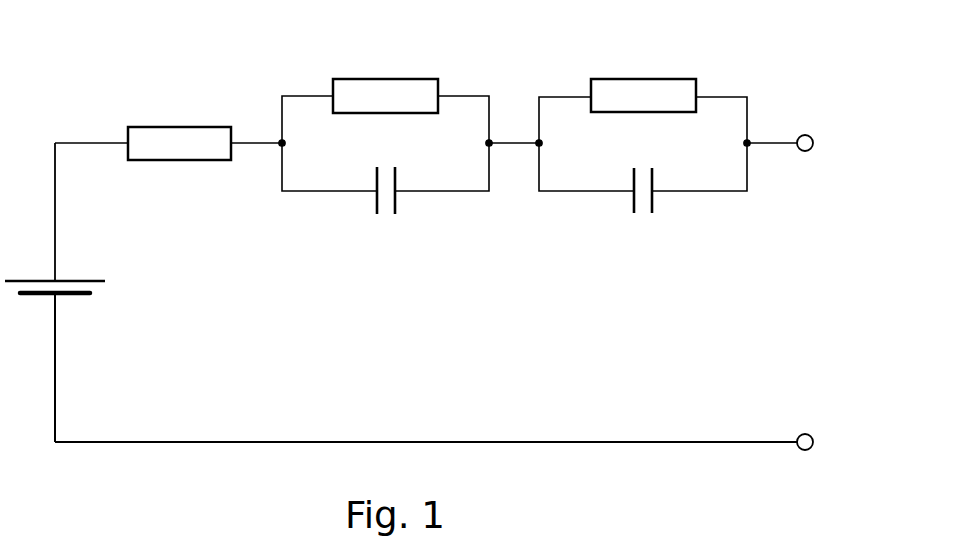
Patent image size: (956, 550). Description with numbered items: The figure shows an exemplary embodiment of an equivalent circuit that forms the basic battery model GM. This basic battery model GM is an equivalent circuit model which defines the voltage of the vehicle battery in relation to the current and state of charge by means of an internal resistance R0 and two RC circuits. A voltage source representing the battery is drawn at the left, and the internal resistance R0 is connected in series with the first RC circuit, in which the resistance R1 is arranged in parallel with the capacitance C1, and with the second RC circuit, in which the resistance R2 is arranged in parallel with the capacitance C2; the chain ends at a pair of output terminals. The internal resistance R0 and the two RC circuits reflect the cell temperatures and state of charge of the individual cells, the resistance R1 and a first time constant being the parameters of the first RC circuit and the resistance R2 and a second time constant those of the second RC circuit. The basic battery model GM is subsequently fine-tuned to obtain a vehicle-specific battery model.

The internal resistance R0 is at (179, 110).
The resistance of the first RC circuit R1 is at (385, 74).
The capacitance of the first RC circuit C1 is at (395, 212).
The resistance of the second RC circuit R2 is at (643, 74).
The capacitance of the second RC circuit C2 is at (649, 213).
The basic battery model GM is at (445, 229).